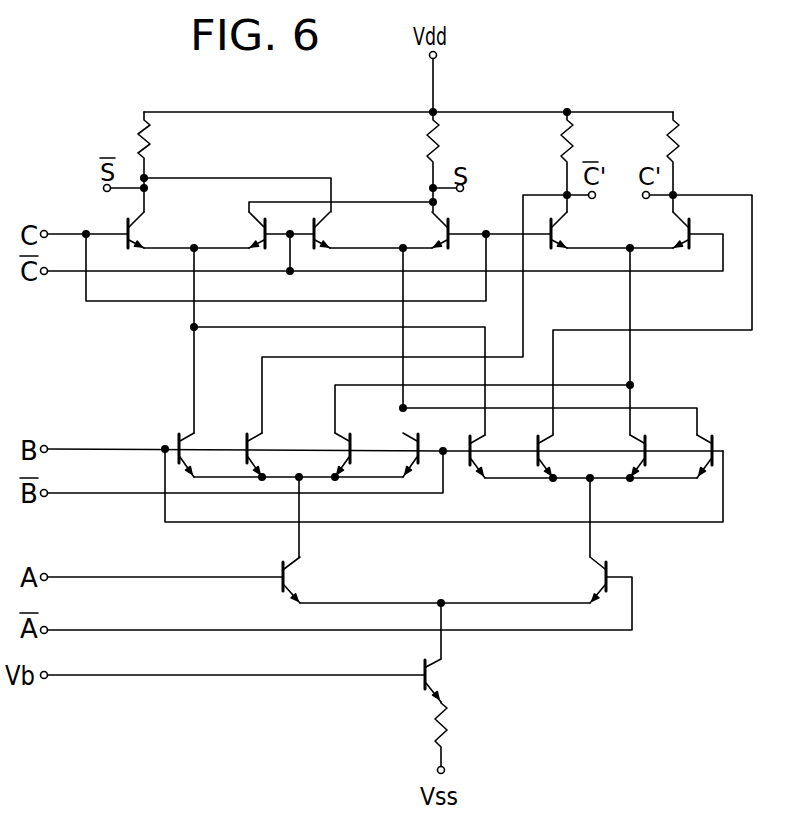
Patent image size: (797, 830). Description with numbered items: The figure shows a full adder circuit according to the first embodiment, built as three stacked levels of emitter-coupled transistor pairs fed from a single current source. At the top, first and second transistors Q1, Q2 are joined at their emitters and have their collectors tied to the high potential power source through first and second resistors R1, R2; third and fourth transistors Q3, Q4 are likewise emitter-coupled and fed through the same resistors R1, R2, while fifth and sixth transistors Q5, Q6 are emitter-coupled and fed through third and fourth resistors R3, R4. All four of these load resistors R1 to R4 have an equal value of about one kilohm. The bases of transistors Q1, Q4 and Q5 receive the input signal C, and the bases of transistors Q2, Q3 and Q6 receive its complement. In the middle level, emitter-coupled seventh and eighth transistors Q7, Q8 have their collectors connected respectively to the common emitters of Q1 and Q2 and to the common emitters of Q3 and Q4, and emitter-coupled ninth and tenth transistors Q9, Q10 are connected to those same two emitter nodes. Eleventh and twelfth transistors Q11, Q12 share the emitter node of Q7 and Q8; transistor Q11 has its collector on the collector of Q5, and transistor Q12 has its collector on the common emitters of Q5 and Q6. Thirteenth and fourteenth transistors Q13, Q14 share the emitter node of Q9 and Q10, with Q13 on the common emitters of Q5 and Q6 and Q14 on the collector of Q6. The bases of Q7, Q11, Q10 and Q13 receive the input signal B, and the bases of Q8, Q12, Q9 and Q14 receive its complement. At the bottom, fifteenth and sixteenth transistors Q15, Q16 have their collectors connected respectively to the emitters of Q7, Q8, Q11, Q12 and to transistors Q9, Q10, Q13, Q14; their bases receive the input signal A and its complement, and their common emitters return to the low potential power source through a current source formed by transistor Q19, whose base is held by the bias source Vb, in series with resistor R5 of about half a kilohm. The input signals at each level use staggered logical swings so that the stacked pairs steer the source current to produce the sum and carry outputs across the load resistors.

The first resistor R1 is at (152, 140).
The second resistor R2 is at (425, 138).
The third resistor R3 is at (559, 140).
The fourth resistor R4 is at (681, 145).
The resistor R5 is at (447, 731).
The first transistor Q1 is at (138, 226).
The second transistor Q2 is at (257, 227).
The third transistor Q3 is at (326, 230).
The fourth transistor Q4 is at (435, 234).
The fifth transistor Q5 is at (560, 230).
The sixth transistor Q6 is at (675, 234).
The seventh transistor Q7 is at (171, 437).
The eighth transistor Q8 is at (406, 445).
The ninth transistor Q9 is at (463, 444).
The tenth transistor Q10 is at (702, 430).
The eleventh transistor Q11 is at (241, 442).
The twelfth transistor Q12 is at (339, 444).
The thirteenth transistor Q13 is at (628, 447).
The fourteenth transistor Q14 is at (528, 443).
The fifteenth transistor Q15 is at (288, 575).
The sixteenth transistor Q16 is at (594, 575).
The transistor Q19 is at (433, 676).